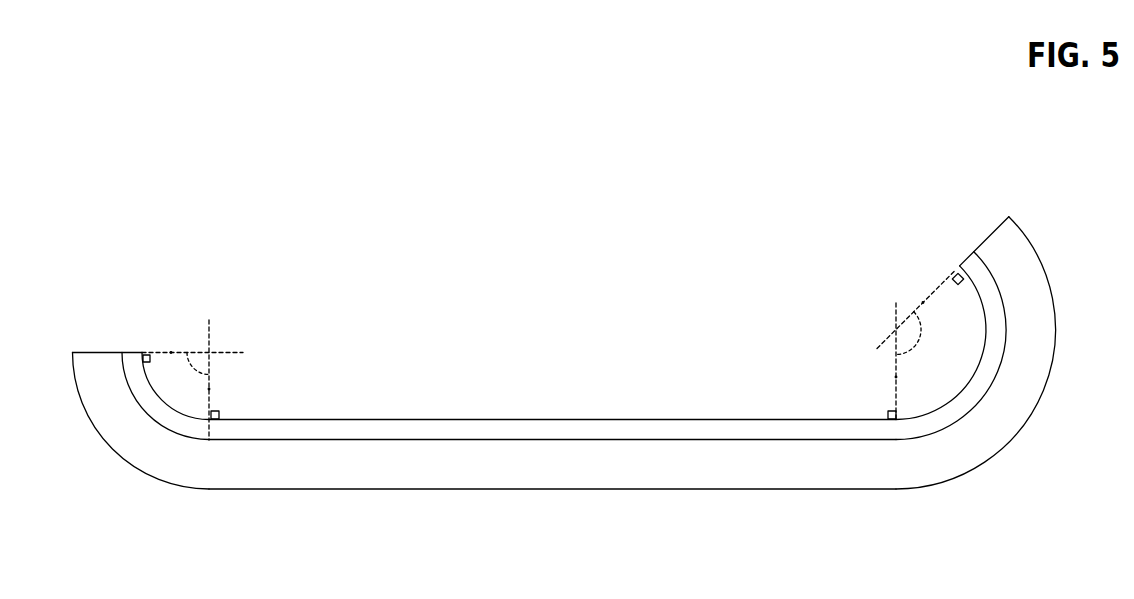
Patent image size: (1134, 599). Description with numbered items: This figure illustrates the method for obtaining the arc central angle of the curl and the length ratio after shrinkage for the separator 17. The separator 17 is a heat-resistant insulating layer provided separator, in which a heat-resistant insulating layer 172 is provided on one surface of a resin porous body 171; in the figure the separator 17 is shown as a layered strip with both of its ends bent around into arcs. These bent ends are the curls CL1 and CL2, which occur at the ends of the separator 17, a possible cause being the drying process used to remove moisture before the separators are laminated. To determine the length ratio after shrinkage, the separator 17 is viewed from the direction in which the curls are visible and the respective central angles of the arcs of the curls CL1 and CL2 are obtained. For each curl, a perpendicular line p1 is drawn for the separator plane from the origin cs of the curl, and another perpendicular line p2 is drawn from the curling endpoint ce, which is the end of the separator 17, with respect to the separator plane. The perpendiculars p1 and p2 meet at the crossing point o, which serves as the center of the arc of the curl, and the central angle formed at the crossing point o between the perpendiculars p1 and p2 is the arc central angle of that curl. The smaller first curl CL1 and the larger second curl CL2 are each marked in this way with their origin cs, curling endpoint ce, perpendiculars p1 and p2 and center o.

The separator 17 is at (564, 384).
The resin porous body 171 is at (495, 480).
The heat-resistant insulating layer 172 is at (473, 418).
The curl CL1 is at (287, 336).
The curl CL2 is at (873, 276).
The crossing point o is at (213, 349).
The curling endpoint ce is at (145, 350).
The origin of the curl cs is at (212, 420).
The perpendicular line p1 is at (214, 389).
The perpendicular line p2 is at (171, 347).